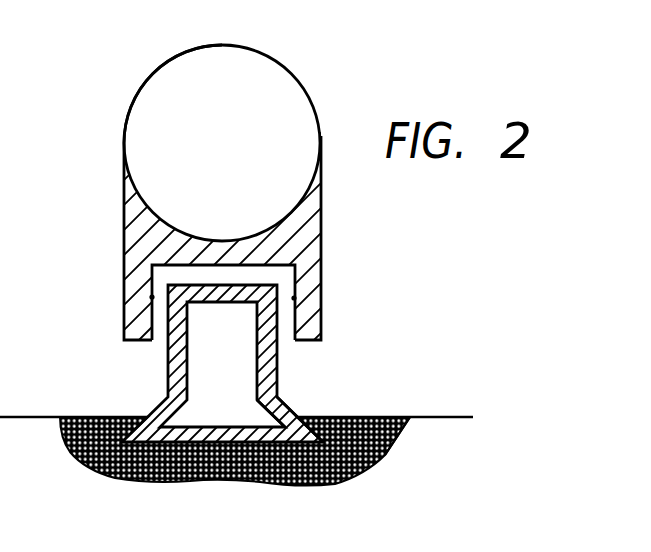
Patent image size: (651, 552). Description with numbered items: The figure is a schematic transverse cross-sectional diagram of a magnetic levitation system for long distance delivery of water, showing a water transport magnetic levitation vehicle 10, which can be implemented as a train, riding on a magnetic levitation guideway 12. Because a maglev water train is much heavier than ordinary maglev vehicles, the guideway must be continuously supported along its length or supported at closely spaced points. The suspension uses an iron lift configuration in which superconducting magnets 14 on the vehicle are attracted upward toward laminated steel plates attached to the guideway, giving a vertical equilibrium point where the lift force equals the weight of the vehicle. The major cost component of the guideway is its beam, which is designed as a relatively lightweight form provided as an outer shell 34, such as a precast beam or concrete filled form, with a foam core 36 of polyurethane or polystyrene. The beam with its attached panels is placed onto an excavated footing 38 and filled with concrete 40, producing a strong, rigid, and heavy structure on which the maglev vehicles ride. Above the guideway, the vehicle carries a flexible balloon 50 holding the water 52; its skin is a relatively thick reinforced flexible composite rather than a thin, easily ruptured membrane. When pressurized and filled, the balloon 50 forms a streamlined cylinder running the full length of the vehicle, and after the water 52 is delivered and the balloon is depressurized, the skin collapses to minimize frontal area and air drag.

The water transport magnetic levitation vehicle 10 is at (139, 222).
The magnetic levitation guideway 12 is at (296, 382).
The superconducting magnets 14 is at (151, 297).
The outer shell 34 is at (167, 353).
The foam core 36 is at (219, 367).
The excavated footing 38 is at (395, 433).
The concrete 40 is at (366, 453).
The flexible balloon 50 is at (173, 62).
The water 52 is at (164, 103).